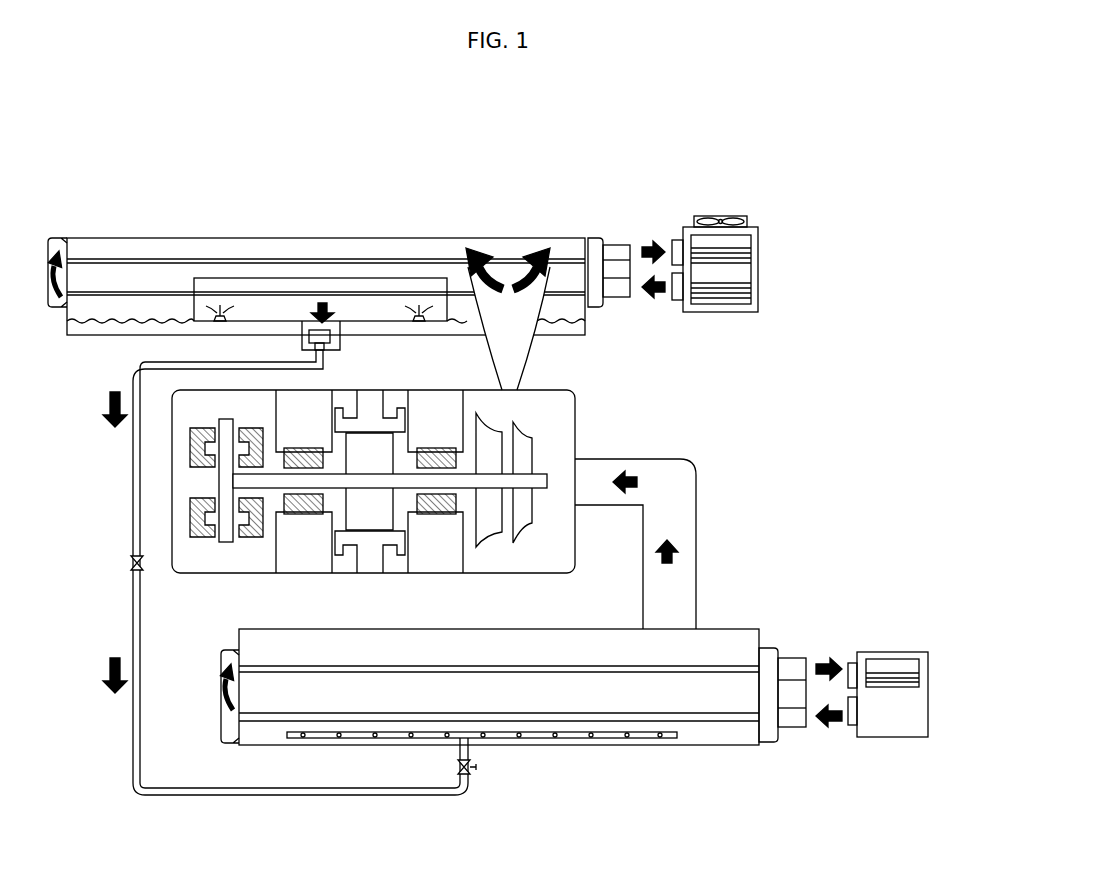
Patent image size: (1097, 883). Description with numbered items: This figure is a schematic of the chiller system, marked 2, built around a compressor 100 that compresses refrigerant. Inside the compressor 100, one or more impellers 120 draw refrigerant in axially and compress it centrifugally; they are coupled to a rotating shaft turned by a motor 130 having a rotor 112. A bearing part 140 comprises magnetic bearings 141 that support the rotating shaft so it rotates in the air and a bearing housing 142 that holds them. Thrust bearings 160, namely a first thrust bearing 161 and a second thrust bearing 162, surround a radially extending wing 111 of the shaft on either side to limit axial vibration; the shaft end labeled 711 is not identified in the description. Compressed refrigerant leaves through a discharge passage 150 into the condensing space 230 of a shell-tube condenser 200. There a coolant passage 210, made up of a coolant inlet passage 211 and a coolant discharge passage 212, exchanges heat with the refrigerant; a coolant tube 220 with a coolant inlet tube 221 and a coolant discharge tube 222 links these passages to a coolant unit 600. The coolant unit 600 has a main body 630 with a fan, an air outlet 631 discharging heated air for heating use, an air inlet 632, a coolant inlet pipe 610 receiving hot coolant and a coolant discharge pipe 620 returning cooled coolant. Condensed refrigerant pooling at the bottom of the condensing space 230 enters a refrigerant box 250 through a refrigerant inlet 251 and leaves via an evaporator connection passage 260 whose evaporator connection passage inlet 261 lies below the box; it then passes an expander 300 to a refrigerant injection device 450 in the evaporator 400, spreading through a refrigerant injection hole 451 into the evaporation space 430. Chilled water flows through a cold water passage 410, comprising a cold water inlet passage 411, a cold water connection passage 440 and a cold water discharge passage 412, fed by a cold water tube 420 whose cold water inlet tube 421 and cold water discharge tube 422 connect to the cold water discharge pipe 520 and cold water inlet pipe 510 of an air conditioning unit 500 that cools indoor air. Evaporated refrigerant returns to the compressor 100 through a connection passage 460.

The laundry treating apparatus 2 is at (642, 133).
The compressor 100 is at (600, 429).
The wings 111 is at (225, 427).
The rotor 112 is at (358, 521).
The impellers 120 is at (522, 519).
The motor 130 is at (370, 545).
The bearing part 140 is at (456, 603).
The magnetic bearings 141 is at (305, 516).
The bearing housing 142 is at (285, 556).
The discharge passage 150 is at (512, 373).
The thrust bearings 160 is at (238, 630).
The first thrust bearing 161 is at (205, 538).
The second thrust bearing 162 is at (236, 544).
The condenser 200 is at (502, 231).
The coolant passage 210 is at (90, 165).
The coolant inlet passage 211 is at (94, 292).
The coolant discharge passage 212 is at (148, 262).
The coolant tube 220 is at (645, 388).
The coolant inlet tube 221 is at (608, 294).
The coolant discharge tube 222 is at (617, 258).
The condensing space 230 is at (563, 312).
The refrigerant box 250 is at (268, 280).
The refrigerant inlet 251 is at (420, 327).
The evaporator connection passage 260 is at (133, 472).
The evaporator connection passage inlet 261 is at (331, 344).
The expander 300 is at (116, 562).
The evaporator 400 is at (580, 768).
The cold water passage 410 is at (683, 835).
The cold water inlet passage 411 is at (705, 719).
The cold water discharge passage 412 is at (733, 668).
The cold water tube 420 is at (765, 803).
The cold water inlet tube 421 is at (789, 726).
The cold water discharge tube 422 is at (793, 671).
The evaporation space 430 is at (682, 738).
The cold water connection passage 440 is at (232, 730).
The refrigerant injection device 450 is at (503, 796).
The refrigerant injection hole 451 is at (378, 740).
The connection passage 460 is at (678, 513).
The air conditioning unit 500 is at (910, 640).
The cold water inlet pipe 510 is at (852, 662).
The cold water discharge pipe 520 is at (853, 726).
The coolant unit 600 is at (778, 289).
The coolant inlet pipe 610 is at (676, 240).
The coolant discharge pipe 620 is at (678, 301).
The main body 630 is at (752, 227).
The air outlet 631 is at (735, 215).
The air inlet 632 is at (721, 290).
The shaft end 711 is at (543, 482).